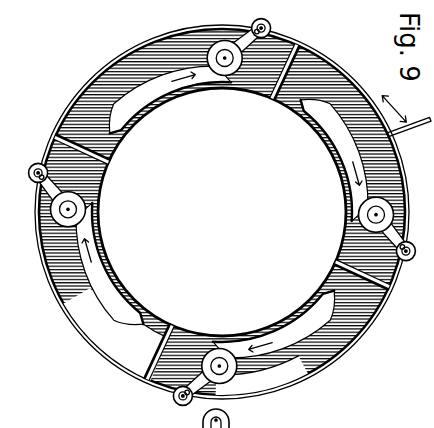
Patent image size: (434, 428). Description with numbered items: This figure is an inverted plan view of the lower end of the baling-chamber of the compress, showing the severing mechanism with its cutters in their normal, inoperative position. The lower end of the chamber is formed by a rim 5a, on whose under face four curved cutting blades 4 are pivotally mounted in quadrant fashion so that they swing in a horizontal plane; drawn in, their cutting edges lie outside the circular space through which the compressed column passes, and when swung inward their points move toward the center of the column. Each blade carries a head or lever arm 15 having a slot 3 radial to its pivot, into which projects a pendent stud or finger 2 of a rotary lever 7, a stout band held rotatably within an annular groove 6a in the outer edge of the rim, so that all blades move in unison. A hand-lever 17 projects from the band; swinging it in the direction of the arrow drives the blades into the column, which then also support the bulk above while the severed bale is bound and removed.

The eye lug 2 is at (268, 27).
The hook 3 is at (222, 212).
The curved blade 4 is at (222, 212).
The ring segment 5a is at (186, 342).
The radial slot 6a is at (222, 212).
The outer rim 7 is at (103, 355).
The lever arm 15 is at (46, 190).
The pin 17 is at (406, 130).